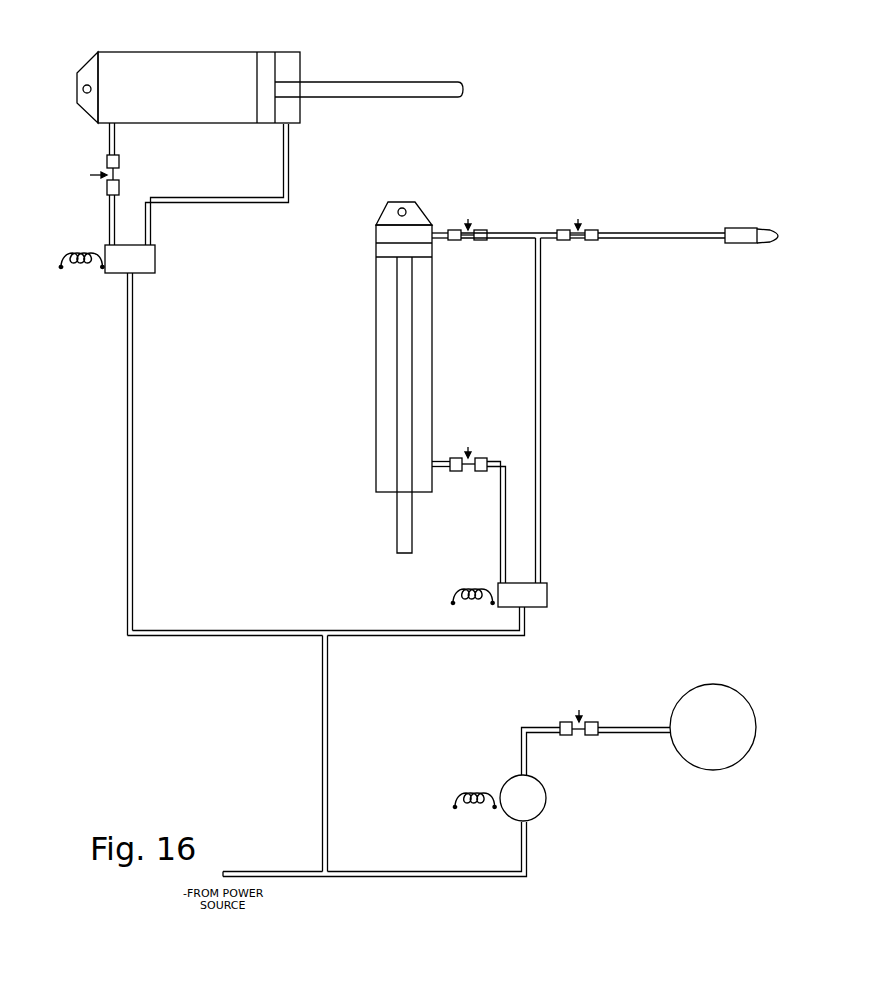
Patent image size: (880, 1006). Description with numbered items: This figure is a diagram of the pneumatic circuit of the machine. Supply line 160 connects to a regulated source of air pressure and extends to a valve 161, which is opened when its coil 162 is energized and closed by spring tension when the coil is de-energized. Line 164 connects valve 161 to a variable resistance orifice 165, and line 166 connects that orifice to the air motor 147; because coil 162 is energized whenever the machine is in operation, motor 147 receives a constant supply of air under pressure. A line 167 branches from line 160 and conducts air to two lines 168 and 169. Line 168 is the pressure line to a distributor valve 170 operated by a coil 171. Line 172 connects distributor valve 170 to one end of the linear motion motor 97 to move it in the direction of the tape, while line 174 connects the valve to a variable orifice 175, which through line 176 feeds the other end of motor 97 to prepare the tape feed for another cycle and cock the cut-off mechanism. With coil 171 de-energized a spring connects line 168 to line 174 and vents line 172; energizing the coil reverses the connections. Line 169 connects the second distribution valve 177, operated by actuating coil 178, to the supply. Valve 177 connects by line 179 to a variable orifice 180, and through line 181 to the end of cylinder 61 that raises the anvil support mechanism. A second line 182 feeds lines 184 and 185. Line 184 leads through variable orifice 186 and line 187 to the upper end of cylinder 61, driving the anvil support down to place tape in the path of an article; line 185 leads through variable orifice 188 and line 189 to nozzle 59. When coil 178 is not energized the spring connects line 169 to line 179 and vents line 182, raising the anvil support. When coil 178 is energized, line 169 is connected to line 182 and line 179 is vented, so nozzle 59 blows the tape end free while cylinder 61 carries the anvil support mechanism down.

The linear motion air motor 97 is at (211, 52).
The line 176 is at (109, 134).
The variable orifice 175 is at (121, 174).
The line 174 is at (109, 220).
The coil 171 is at (59, 255).
The distributor valve 170 is at (155, 258).
The line 172 is at (228, 204).
The line 168 is at (133, 314).
The line 169 is at (395, 630).
The line 167 is at (328, 725).
The line 160 is at (248, 870).
The cylinder 61 is at (376, 342).
The line 187 is at (439, 231).
The variable orifice 186 is at (466, 242).
The line 184 is at (512, 232).
The variable orifice 188 is at (576, 243).
The line 185 is at (550, 240).
The line 189 is at (660, 210).
The nozzle 59 is at (743, 238).
The line 182 is at (542, 375).
The line 181 is at (441, 461).
The variable orifice 180 is at (467, 473).
The line 179 is at (500, 522).
The actuating coil 178 is at (468, 581).
The distribution valve 177 is at (547, 590).
The line 164 is at (541, 727).
The variable resistance orifice 165 is at (578, 738).
The line 166 is at (646, 708).
The air motor 147 is at (723, 770).
The valve 161 is at (547, 802).
The coil 162 is at (468, 786).